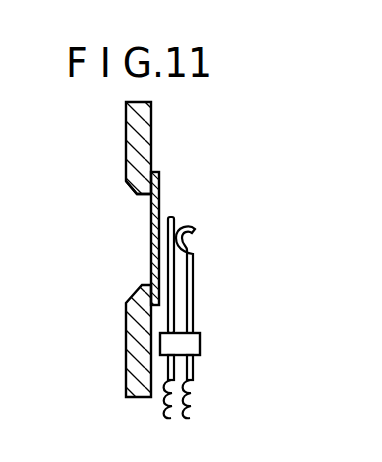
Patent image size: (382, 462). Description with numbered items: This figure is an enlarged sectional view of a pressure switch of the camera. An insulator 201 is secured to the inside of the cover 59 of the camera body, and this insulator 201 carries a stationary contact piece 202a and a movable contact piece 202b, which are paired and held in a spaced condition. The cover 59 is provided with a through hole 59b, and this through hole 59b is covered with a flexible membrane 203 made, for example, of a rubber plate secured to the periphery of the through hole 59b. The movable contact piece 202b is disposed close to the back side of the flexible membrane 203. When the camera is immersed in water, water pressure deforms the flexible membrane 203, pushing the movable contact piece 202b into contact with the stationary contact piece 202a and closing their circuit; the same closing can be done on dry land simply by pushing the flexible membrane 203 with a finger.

The cover 59 is at (138, 145).
The through hole 59b is at (134, 190).
The flexible membrane 203 is at (153, 254).
The insulator 201 is at (200, 342).
The stationary contact piece 202a is at (193, 287).
The movable contact piece 202b is at (170, 267).